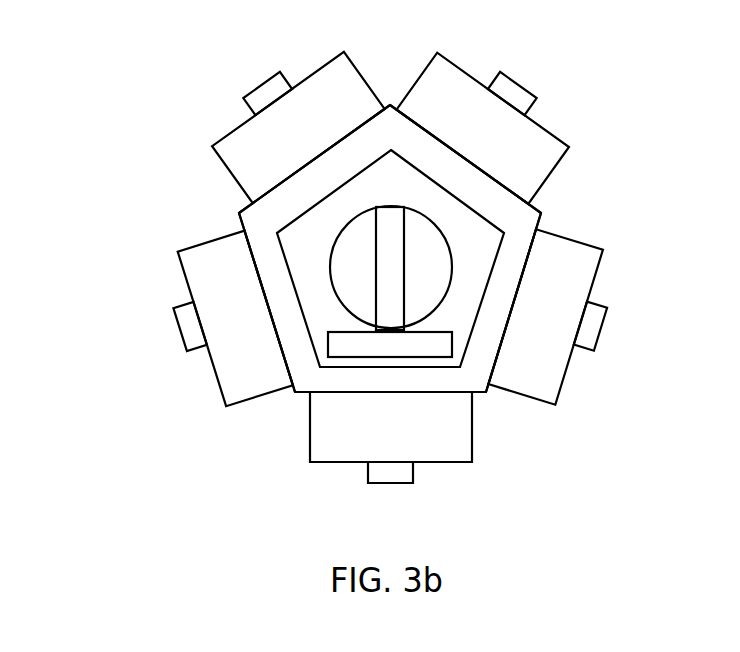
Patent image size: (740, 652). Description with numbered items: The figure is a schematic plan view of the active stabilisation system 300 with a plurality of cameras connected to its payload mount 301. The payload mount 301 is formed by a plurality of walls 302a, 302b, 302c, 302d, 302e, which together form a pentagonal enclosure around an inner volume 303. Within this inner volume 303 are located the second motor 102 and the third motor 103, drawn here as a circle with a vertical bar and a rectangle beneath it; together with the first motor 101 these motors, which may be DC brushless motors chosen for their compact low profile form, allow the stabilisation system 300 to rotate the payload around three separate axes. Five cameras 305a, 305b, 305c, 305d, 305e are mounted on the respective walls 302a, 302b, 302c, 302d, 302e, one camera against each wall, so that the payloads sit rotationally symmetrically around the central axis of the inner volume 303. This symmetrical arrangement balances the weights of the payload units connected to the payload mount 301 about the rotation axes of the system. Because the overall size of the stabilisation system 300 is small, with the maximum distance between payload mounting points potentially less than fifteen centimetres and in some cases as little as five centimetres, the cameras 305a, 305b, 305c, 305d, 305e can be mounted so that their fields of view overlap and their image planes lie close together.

The stabilisation system 300 is at (126, 82).
The payload mount 301 is at (270, 198).
The wall 302a is at (309, 394).
The wall 302b is at (243, 232).
The wall 302c is at (365, 122).
The wall 302d is at (521, 199).
The wall 302e is at (492, 387).
The inner volume 303 is at (415, 200).
The camera 305a is at (352, 462).
The camera 305b is at (180, 258).
The camera 305c is at (317, 70).
The camera 305d is at (545, 129).
The camera 305e is at (597, 246).
The first motor 101 is at (353, 257).
The second motor 102 is at (405, 268).
The third motor 103 is at (412, 357).